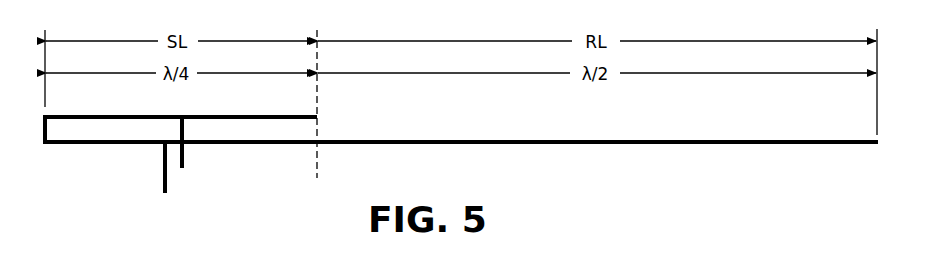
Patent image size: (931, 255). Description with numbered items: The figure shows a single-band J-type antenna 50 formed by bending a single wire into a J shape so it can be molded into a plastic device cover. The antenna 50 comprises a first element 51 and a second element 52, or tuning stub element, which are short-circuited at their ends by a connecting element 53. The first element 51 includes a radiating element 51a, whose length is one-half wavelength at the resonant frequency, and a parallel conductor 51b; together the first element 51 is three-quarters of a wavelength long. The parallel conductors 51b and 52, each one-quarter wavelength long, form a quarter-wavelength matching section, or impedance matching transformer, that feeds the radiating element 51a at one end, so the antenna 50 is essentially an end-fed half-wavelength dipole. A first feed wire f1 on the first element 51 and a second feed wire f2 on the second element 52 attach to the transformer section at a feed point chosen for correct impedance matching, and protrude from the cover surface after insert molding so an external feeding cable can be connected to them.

The J-type antenna 50 is at (448, 160).
The first element 51 is at (446, 138).
The radiating element 51a is at (497, 144).
The parallel conductor 51b is at (283, 145).
The second element 52 is at (318, 112).
The connecting element 53 is at (44, 124).
The first feed wire f1 is at (167, 190).
The second feed wire f2 is at (184, 155).